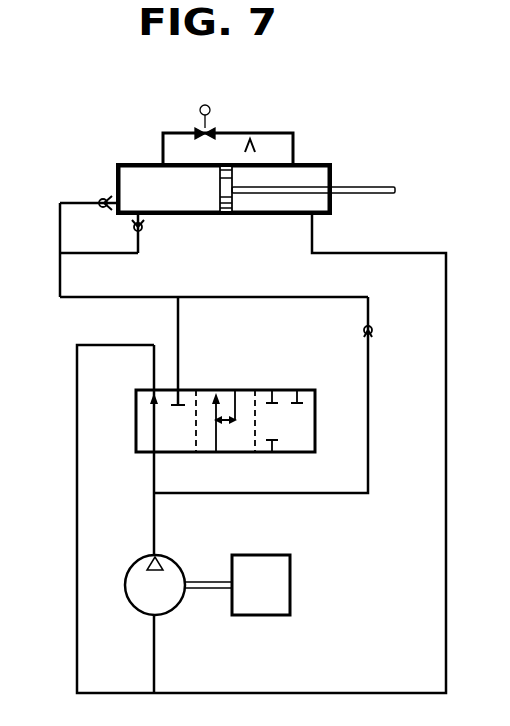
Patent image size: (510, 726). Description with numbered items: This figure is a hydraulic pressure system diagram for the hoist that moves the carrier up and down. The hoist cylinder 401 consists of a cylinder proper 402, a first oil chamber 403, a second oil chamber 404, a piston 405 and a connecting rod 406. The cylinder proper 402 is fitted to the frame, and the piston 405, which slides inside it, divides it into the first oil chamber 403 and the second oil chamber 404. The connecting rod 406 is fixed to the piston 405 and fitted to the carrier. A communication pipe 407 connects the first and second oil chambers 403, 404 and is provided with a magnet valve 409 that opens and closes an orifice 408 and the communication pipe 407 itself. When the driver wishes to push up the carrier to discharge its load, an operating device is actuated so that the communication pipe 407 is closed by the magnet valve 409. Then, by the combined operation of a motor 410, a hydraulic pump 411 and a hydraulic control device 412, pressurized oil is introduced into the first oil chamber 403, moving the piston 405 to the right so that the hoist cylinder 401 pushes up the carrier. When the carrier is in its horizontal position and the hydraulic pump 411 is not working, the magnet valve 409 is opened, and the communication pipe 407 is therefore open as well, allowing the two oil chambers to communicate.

The hoist cylinder 401 is at (138, 158).
The cylinder proper 402 is at (118, 185).
The first oil chamber 403 is at (167, 200).
The second oil chamber 404 is at (273, 205).
The piston 405 is at (223, 213).
The connecting rod 406 is at (370, 193).
The communication pipe 407 is at (288, 133).
The orifice 408 is at (250, 120).
The magnet valve 409 is at (202, 106).
The motor 410 is at (291, 593).
The hydraulic pump 411 is at (170, 560).
The hydraulic control device 412 is at (245, 383).